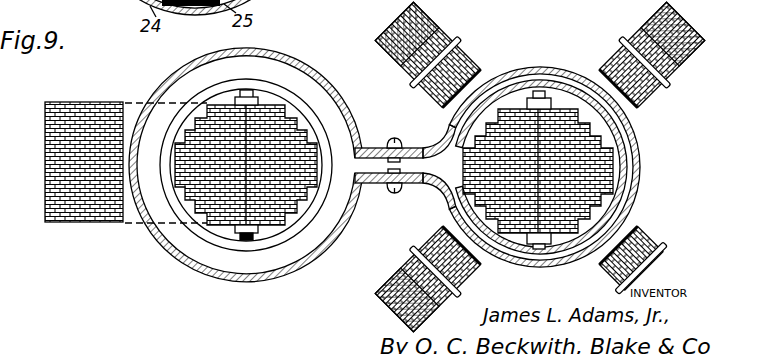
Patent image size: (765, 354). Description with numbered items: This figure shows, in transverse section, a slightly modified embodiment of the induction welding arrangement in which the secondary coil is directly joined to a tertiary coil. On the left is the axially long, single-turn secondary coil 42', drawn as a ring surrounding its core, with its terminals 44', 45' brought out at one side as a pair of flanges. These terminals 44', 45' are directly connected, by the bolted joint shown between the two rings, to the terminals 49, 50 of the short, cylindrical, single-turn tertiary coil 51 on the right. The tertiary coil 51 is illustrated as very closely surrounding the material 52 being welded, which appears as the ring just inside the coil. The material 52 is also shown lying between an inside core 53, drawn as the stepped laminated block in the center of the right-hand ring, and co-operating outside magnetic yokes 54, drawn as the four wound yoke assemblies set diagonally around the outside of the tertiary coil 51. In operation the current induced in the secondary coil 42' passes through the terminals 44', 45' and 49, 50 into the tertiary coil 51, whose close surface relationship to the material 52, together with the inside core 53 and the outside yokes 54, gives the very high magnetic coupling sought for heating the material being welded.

The single-turn secondary coil 42' is at (245, 159).
The terminal of secondary coil 44' is at (389, 132).
The terminal of secondary coil 45' is at (386, 209).
The terminal of tertiary coil 49 is at (416, 149).
The terminal of tertiary coil 50 is at (417, 185).
The single-turn tertiary coil 51 is at (630, 146).
The material being welded 52 is at (620, 170).
The inside core 53 is at (605, 198).
The outside magnetic yokes 54 is at (481, 62).